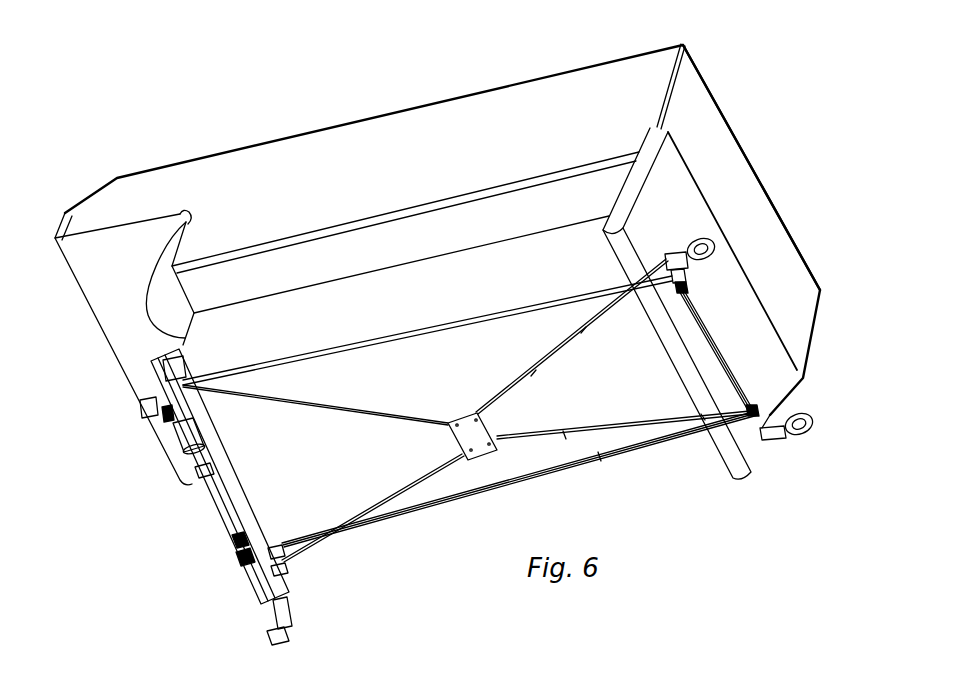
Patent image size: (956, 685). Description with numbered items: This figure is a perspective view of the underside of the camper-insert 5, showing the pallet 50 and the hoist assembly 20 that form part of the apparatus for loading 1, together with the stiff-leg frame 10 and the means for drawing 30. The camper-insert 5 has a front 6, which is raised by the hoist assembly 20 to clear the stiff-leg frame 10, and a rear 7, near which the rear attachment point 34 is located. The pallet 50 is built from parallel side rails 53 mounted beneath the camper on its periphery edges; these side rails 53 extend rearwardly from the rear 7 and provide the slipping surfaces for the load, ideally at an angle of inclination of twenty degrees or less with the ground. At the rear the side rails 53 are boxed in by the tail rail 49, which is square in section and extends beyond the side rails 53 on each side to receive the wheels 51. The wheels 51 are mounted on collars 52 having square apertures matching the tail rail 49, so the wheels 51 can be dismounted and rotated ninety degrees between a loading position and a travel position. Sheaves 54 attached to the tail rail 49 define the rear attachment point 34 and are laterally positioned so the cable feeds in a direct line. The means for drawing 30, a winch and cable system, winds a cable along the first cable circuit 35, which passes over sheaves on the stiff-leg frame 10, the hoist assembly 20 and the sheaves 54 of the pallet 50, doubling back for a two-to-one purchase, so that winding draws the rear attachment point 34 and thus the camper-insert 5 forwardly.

The apparatus for loading 1 is at (600, 484).
The camper-insert 5 is at (524, 132).
The front of camper-insert 6 is at (194, 230).
The rear of camper-insert 7 is at (765, 215).
The stiff-leg frame 10 is at (300, 584).
The hoist assembly 20 is at (372, 522).
The means for drawing 30 is at (168, 449).
The rear attachment point 34 is at (758, 436).
The first cable circuit 35 is at (573, 308).
The tail rail 49 is at (728, 350).
The pallet 50 is at (640, 456).
The wheels 51 is at (716, 235).
The collars 52 is at (666, 254).
The side rails 53 is at (438, 320).
The sheaves 54 is at (684, 291).